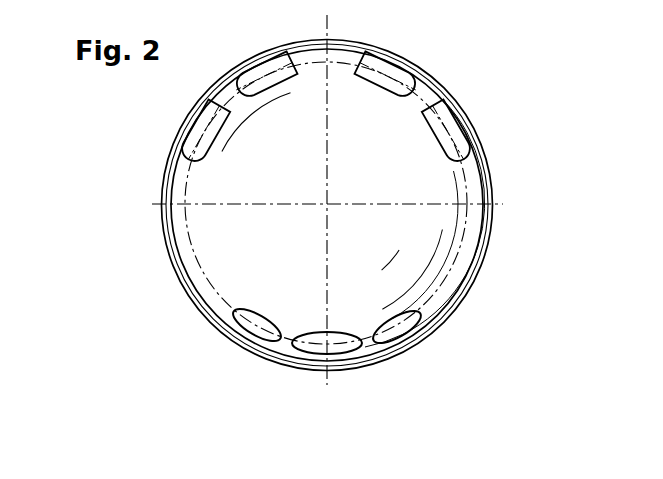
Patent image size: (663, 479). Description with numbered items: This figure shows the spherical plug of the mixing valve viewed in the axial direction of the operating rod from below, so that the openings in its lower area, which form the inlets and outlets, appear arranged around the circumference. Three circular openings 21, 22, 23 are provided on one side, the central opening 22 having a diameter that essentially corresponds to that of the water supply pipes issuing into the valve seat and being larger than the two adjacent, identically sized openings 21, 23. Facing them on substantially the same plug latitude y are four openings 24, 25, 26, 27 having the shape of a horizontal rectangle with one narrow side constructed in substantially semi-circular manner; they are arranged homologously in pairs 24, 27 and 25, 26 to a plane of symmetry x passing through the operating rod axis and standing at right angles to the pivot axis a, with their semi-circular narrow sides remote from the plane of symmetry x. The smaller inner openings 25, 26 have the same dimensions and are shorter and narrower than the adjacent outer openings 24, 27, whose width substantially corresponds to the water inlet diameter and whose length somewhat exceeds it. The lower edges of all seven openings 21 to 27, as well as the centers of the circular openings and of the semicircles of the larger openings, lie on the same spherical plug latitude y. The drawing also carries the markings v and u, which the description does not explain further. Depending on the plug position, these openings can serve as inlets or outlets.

The circular opening 21 is at (254, 334).
The central circular opening 22 is at (319, 350).
The circular opening 23 is at (402, 334).
The outer opening 24 is at (462, 136).
The inner opening 25 is at (406, 76).
The inner opening 26 is at (258, 73).
The outer opening 27 is at (193, 135).
The vertical axis v is at (327, 60).
The plane of symmetry x is at (329, 150).
The pivot axis a is at (444, 204).
The plug latitude y is at (458, 266).
The pocket center u is at (328, 348).